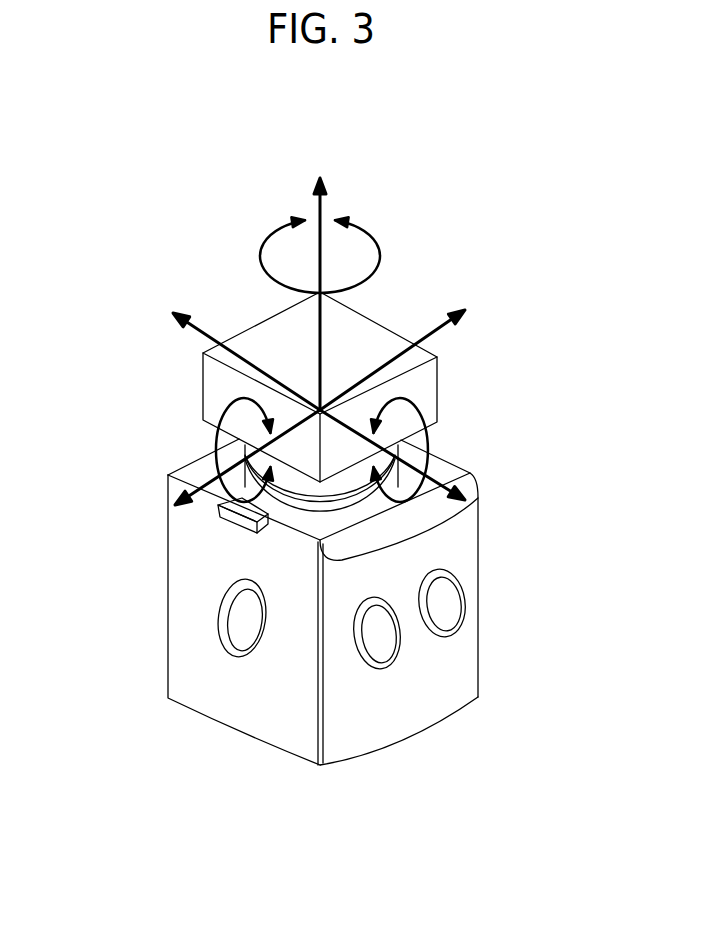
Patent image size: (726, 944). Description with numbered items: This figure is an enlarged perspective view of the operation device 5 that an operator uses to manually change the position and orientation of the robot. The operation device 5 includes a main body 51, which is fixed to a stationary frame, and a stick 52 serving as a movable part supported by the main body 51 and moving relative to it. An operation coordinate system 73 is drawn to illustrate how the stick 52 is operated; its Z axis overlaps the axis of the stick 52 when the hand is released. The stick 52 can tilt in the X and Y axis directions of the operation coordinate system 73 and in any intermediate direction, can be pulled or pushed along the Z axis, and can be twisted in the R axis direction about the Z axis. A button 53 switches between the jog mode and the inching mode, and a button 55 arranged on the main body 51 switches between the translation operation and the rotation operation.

The operation device 5 is at (459, 227).
The main body 51 is at (462, 543).
The stick 52 is at (438, 388).
The button 53 is at (438, 600).
The button 55 is at (242, 620).
The operation coordinate system 73 is at (317, 215).